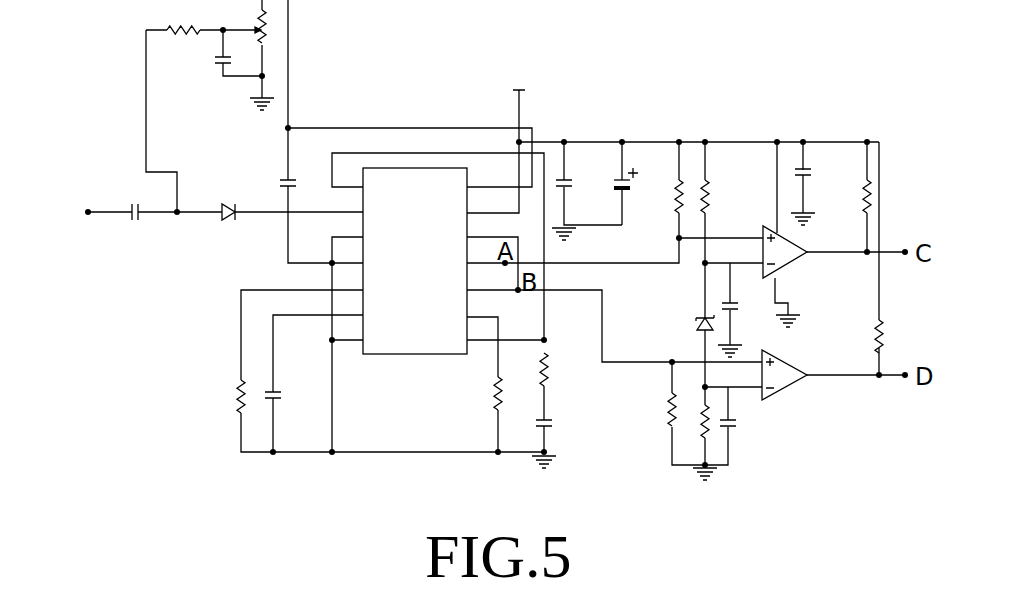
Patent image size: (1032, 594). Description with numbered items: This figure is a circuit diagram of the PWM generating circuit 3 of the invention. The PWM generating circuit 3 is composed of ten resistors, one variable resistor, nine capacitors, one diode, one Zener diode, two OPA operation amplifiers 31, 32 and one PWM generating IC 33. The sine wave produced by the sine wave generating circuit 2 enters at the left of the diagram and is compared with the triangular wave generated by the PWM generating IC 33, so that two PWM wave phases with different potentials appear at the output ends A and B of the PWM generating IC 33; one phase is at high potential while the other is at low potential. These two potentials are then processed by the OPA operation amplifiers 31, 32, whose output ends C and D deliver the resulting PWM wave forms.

The sine wave generating circuit 2 is at (88, 212).
The PWM generating circuit 3 is at (200, 322).
The OPA operation amplifier 31 is at (787, 253).
The OPA operation amplifier 32 is at (778, 382).
The PWM generating IC 33 is at (425, 338).